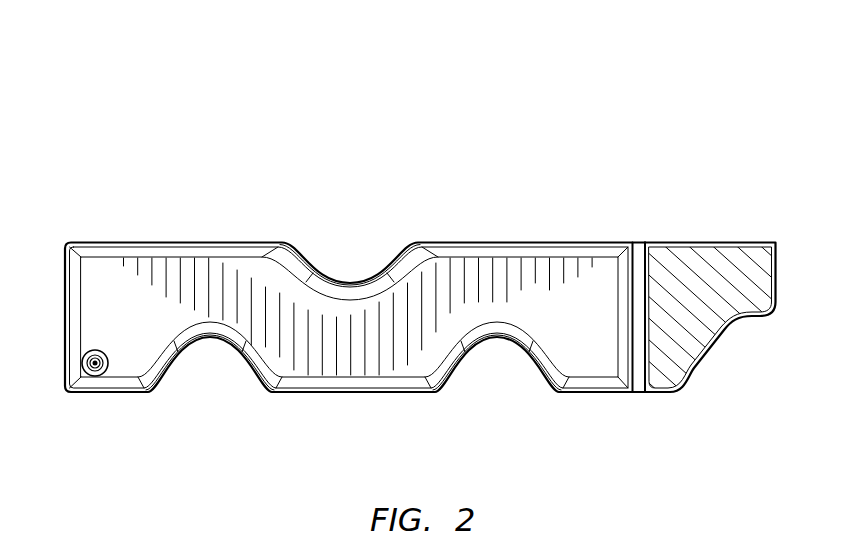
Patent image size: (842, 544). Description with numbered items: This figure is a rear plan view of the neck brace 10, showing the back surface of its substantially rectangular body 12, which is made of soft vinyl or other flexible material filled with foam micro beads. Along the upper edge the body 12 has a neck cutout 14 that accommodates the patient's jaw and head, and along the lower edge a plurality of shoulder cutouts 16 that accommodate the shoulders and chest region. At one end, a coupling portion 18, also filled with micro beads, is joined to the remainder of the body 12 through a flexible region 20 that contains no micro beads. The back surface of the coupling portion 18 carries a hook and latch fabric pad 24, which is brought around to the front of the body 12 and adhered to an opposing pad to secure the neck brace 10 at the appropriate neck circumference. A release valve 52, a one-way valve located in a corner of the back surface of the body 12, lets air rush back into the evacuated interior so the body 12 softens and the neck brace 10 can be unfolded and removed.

The neck brace 10 is at (88, 188).
The body 12 is at (168, 288).
The neck cutout 14 is at (318, 268).
The shoulder cutouts 16 is at (168, 363).
The coupling portion 18 is at (776, 259).
The flexible region 20 is at (638, 388).
The hook and latch fabric pad 24 is at (688, 290).
The release valve 52 is at (98, 378).